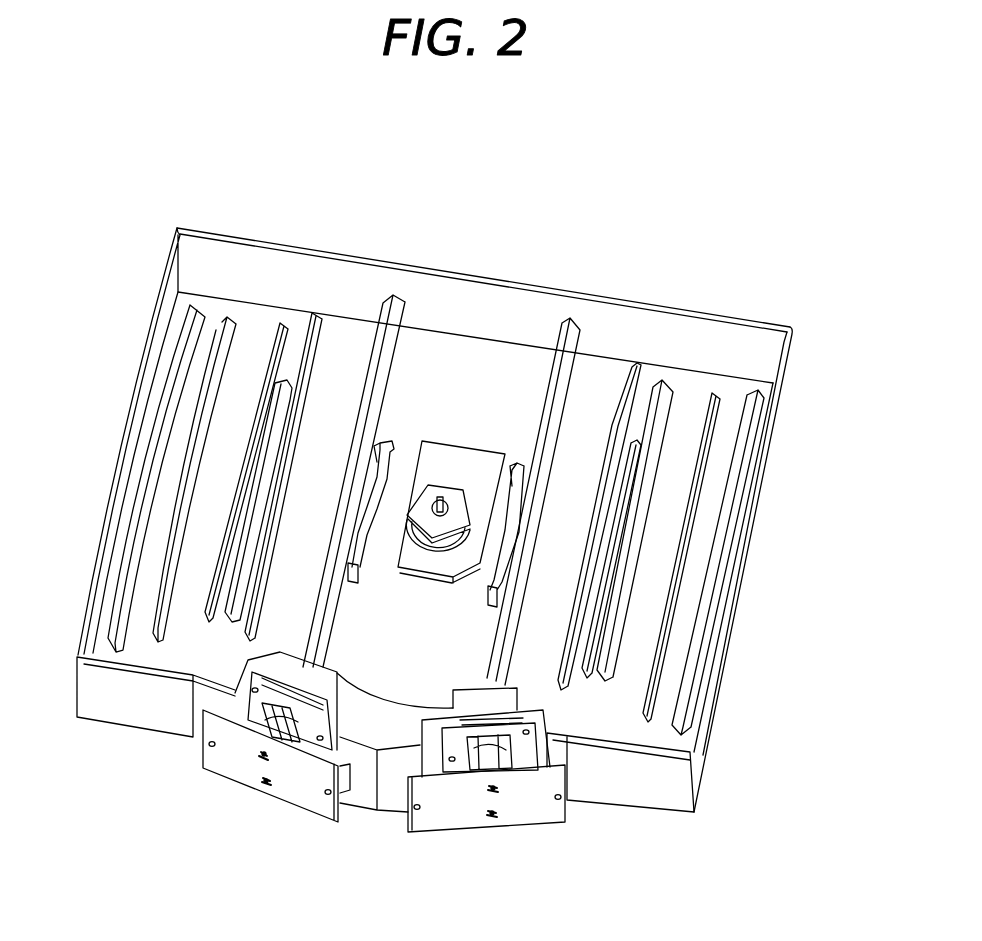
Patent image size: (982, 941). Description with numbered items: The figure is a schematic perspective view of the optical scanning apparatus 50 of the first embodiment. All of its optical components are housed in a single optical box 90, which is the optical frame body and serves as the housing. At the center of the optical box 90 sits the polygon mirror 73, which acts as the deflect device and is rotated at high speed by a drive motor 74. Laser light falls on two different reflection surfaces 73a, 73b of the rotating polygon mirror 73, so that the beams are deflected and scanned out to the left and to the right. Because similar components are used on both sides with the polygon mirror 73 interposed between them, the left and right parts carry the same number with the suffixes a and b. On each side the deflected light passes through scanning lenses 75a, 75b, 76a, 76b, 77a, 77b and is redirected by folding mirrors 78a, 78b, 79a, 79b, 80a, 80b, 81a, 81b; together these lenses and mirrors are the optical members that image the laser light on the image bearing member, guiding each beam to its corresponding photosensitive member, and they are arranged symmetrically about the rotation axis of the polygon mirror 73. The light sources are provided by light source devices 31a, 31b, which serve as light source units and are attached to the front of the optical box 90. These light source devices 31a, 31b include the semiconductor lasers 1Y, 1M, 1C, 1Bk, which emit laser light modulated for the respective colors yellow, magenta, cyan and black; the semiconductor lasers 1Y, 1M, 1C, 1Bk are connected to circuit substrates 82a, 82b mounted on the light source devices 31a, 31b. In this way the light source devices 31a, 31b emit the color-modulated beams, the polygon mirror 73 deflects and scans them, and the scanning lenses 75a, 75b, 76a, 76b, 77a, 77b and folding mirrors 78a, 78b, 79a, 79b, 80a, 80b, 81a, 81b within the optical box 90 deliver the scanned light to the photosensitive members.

The optical scanning apparatus 50 is at (407, 206).
The optical box 90 is at (775, 433).
The polygon mirror 73 is at (428, 485).
The drive motor 74 is at (480, 462).
The reflection surface 73a is at (407, 570).
The reflection surface 73b is at (453, 577).
The scanning lens 75a is at (384, 442).
The scanning lens 75b is at (517, 463).
The scanning lens 76a is at (310, 360).
The scanning lens 76b is at (633, 370).
The scanning lens 77a is at (232, 318).
The scanning lens 77b is at (713, 393).
The folding mirror 78a is at (185, 357).
The folding mirror 78b is at (732, 497).
The folding mirror 79a is at (263, 383).
The folding mirror 79b is at (638, 528).
The folding mirror 80a is at (277, 435).
The folding mirror 80b is at (610, 567).
The folding mirror 81a is at (345, 502).
The folding mirror 81b is at (540, 577).
The circuit substrate 82a is at (222, 764).
The circuit substrate 82b is at (428, 820).
The light source device 31a is at (305, 752).
The light source device 31b is at (522, 750).
The semiconductor laser 1M is at (260, 757).
The semiconductor laser 1Y is at (264, 783).
The semiconductor laser 1C is at (490, 790).
The semiconductor laser 1Bk is at (493, 815).